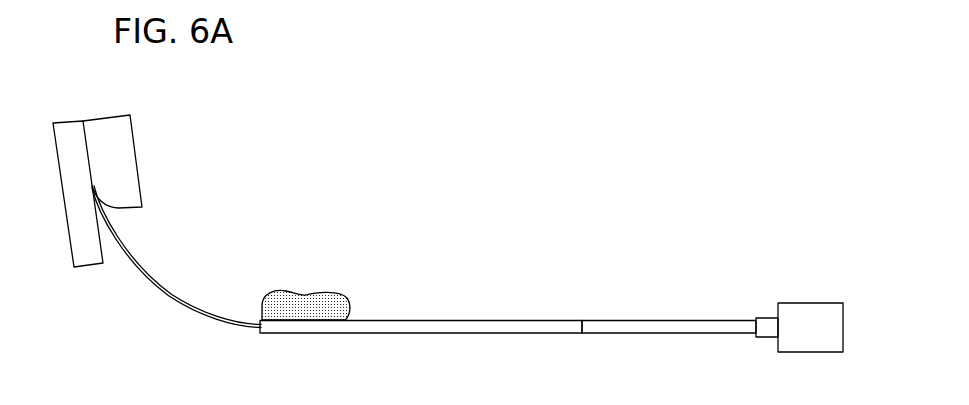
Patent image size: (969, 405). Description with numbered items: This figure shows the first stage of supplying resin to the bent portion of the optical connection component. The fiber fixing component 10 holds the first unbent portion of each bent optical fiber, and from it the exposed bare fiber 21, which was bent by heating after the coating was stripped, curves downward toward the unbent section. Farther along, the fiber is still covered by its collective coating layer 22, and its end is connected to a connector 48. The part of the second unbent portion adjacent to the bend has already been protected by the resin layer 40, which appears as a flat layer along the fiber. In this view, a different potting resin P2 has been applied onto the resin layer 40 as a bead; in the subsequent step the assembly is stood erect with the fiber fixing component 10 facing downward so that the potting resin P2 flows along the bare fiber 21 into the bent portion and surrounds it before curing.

The fiber fixing component 10 is at (147, 137).
The bare fiber 21 is at (151, 285).
The collective coating layer 22 is at (656, 320).
The resin layer 40 is at (457, 334).
The connector 48 is at (814, 312).
The potting resin P2 is at (308, 297).